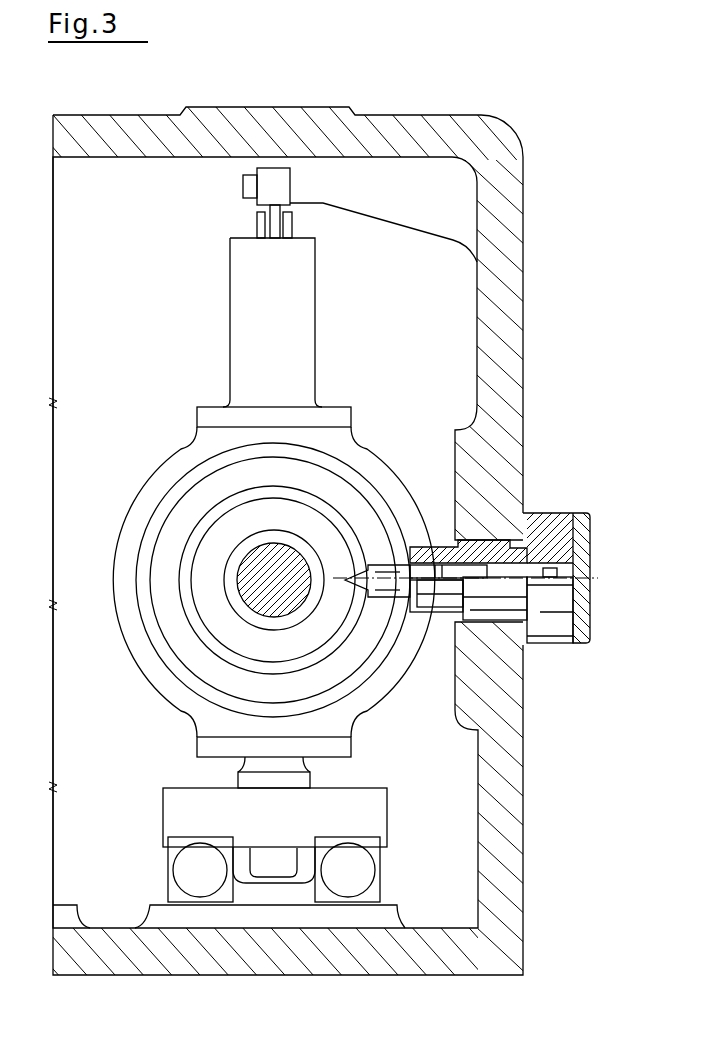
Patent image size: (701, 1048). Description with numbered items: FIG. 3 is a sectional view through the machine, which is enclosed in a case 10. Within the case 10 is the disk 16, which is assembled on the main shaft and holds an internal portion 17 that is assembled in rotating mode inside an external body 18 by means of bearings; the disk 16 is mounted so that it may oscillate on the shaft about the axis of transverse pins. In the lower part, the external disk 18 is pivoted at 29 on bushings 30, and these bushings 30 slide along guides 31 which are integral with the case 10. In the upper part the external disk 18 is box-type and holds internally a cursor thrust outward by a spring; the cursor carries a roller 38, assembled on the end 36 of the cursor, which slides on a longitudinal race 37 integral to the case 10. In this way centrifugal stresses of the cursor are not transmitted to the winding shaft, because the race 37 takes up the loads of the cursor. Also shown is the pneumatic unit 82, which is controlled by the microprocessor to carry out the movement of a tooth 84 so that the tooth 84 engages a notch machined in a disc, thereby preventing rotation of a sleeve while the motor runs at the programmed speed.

The case 10 is at (398, 955).
The disk 16 is at (152, 439).
The internal portion 17 is at (315, 527).
The external body 18 is at (300, 358).
The pivot 29 is at (353, 817).
The bushings 30 is at (373, 887).
The guides 31 is at (360, 858).
The end of the cursor 36 is at (288, 217).
The longitudinal race 37 is at (280, 178).
The roller 38 is at (258, 217).
The pneumatic unit 82 is at (563, 523).
The tooth 84 is at (353, 597).